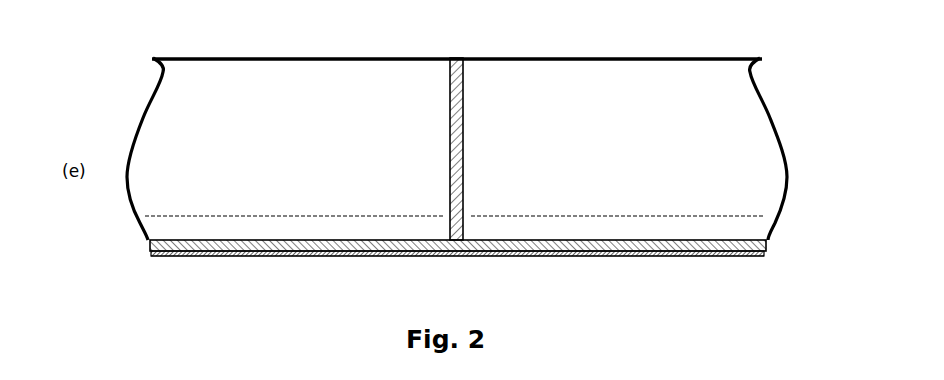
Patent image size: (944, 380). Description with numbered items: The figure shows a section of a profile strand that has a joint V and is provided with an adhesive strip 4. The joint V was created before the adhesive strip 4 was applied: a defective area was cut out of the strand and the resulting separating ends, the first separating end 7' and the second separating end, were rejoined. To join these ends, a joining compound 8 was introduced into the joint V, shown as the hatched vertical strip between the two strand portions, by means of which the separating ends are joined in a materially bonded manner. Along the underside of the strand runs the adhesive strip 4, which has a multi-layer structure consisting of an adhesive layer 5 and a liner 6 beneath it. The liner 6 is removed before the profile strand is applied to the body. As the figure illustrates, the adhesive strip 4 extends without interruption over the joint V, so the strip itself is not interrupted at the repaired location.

The adhesive strip 4 is at (178, 257).
The adhesive layer 5 is at (769, 243).
The liner 6 is at (768, 256).
The first separating end 7' is at (117, 149).
The joining compound 8 is at (458, 57).
The joint V is at (452, 47).